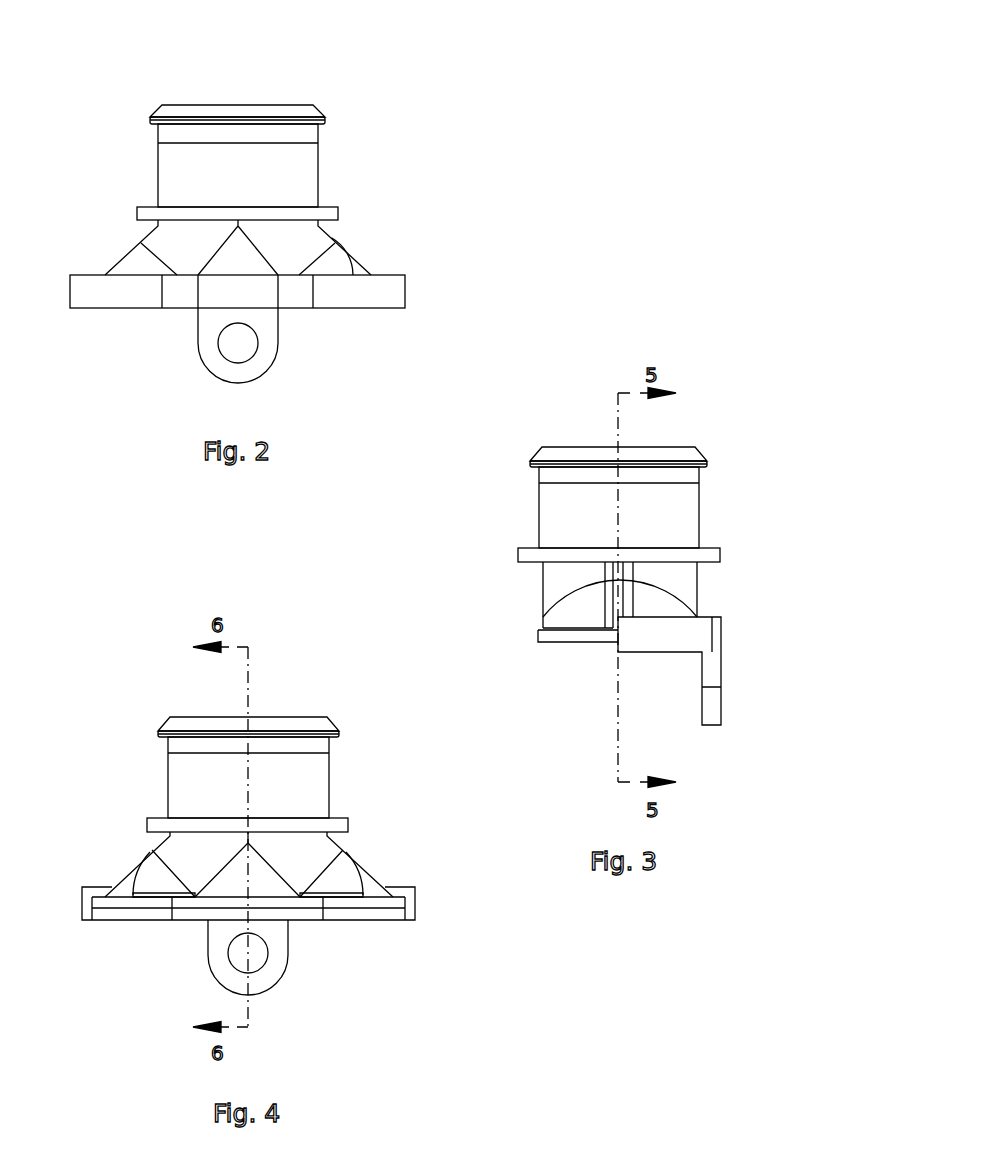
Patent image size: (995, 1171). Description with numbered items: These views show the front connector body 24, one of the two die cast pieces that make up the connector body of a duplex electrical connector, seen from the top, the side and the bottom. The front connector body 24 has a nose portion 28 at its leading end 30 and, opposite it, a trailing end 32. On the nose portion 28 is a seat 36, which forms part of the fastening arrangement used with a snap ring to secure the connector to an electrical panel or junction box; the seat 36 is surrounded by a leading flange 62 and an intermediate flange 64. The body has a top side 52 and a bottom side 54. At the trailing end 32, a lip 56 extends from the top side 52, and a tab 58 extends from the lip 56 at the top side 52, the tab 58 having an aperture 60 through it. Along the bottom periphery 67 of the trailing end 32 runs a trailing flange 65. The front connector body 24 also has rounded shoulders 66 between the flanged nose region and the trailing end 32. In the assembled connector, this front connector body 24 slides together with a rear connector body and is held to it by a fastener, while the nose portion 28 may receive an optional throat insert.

In FIG. 2, the front connector body 24 is at (94, 102).
In FIG. 3, the front connector body 24 is at (486, 449).
In FIG. 4, the front connector body 24 is at (88, 707).
In FIG. 2, the nose portion 28 is at (318, 172).
In FIG. 2, the leading end 30 is at (232, 105).
In FIG. 2, the trailing end 32 is at (296, 310).
In FIG. 4, the trailing end 32 is at (305, 921).
In FIG. 2, the seat 36 is at (250, 185).
In FIG. 3, the seat 36 is at (674, 527).
In FIG. 3, the top side 52 is at (698, 590).
In FIG. 3, the bottom side 54 is at (540, 602).
In FIG. 4, the bottom side 54 is at (261, 885).
In FIG. 2, the lip 56 is at (405, 290).
In FIG. 4, the lip 56 is at (415, 905).
In FIG. 2, the tab 58 is at (213, 370).
In FIG. 3, the tab 58 is at (711, 727).
In FIG. 4, the tab 58 is at (223, 985).
In FIG. 2, the aperture 60 is at (234, 343).
In FIG. 3, the leading flange 62 is at (706, 462).
In FIG. 3, the intermediate flange 64 is at (720, 556).
In FIG. 4, the trailing flange 65 is at (365, 920).
In FIG. 2, the rounded shoulders 66 is at (123, 274).
In FIG. 4, the rounded shoulders 66 is at (367, 867).
In FIG. 4, the bottom periphery 67 is at (157, 913).